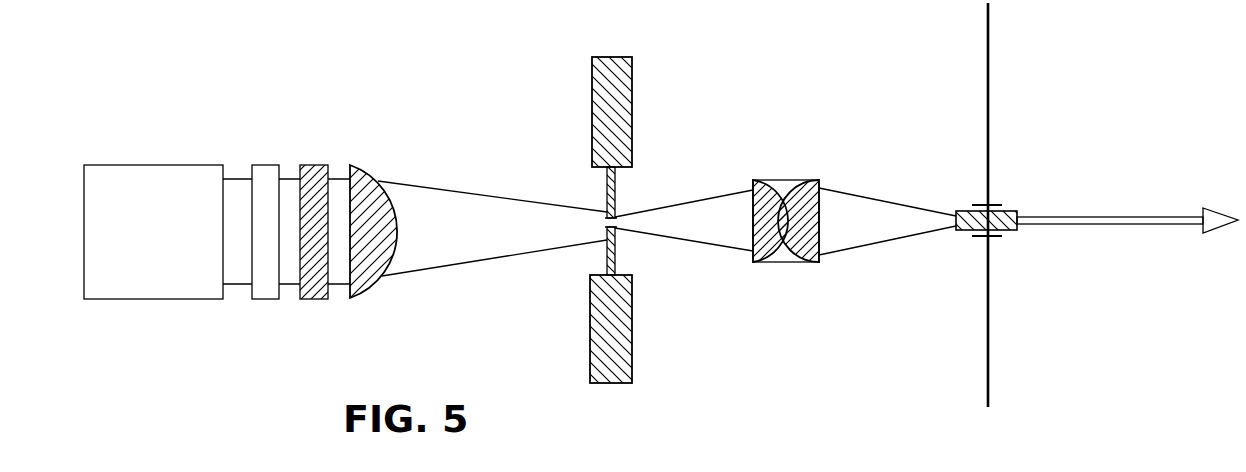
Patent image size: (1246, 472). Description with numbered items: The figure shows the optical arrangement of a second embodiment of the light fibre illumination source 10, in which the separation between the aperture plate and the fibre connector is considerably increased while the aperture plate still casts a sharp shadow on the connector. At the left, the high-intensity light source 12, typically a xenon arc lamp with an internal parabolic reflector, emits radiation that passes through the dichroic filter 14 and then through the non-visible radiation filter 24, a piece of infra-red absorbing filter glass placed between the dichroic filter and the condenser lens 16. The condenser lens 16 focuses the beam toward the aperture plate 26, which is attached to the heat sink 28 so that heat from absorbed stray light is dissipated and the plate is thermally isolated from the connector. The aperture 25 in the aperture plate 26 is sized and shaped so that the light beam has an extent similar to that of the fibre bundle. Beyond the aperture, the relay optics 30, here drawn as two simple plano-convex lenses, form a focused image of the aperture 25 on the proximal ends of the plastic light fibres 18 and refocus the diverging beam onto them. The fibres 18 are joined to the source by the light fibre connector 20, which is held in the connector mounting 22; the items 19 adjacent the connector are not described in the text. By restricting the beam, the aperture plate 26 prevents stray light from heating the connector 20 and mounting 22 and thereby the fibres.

The light fibre illumination source 10 is at (288, 148).
The high-intensity light source 12 is at (137, 265).
The dichroic filter 14 is at (260, 300).
The non-visible radiation filter 24 is at (318, 300).
The condenser lens 16 is at (360, 300).
The heat sink 28 is at (613, 57).
The aperture plate 26 is at (607, 192).
The aperture 25 is at (605, 223).
The relay optics 30 is at (752, 235).
The connector mounting 22 is at (988, 60).
The retaining washers 19 is at (998, 203).
The light fibre connector 20 is at (1010, 230).
The plastic light fibres 18 is at (1120, 215).